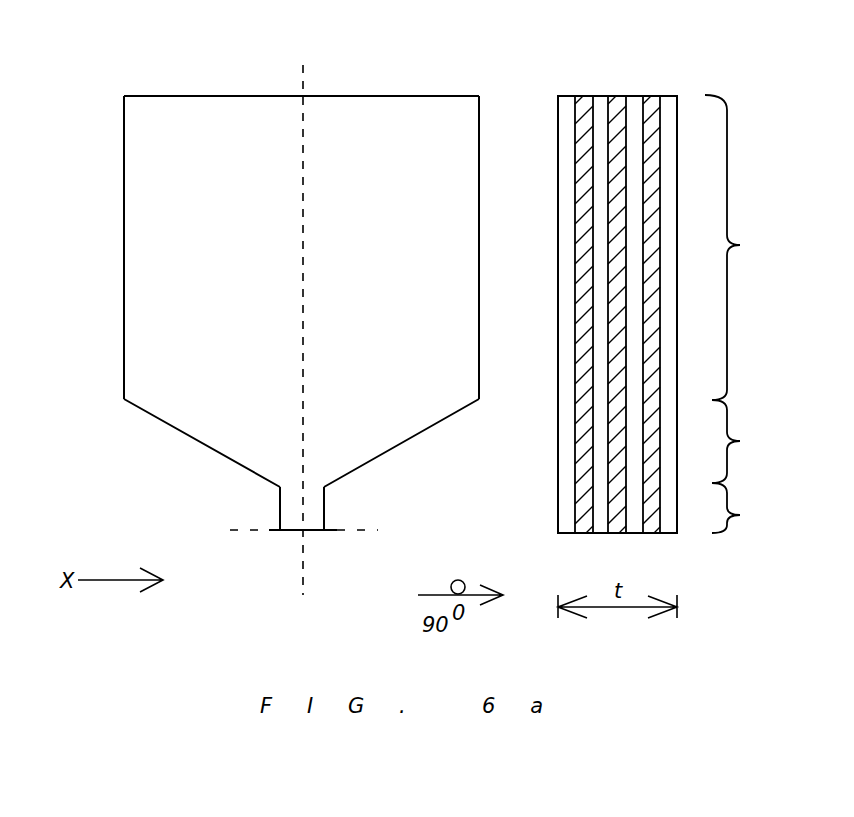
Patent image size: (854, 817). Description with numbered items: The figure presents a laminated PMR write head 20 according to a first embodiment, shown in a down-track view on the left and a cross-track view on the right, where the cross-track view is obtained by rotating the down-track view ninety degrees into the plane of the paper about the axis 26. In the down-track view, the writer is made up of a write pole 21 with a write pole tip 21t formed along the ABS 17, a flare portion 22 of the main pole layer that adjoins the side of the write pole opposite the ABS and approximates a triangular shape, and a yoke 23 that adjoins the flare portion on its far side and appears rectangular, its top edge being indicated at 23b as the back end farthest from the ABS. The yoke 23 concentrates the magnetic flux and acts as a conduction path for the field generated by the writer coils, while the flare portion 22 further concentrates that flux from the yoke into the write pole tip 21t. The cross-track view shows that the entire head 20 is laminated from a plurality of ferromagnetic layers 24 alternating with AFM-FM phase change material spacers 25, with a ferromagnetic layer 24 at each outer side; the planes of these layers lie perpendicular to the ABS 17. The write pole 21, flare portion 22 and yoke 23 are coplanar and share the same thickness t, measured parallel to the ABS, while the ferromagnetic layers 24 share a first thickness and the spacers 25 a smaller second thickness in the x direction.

The PMR write head 20 is at (104, 84).
The yoke 23 is at (140, 252).
The top edge of body portion 23b is at (403, 95).
The flare portion 22 is at (207, 422).
The write pole 21 is at (738, 508).
The write pole tip 21t is at (318, 533).
The ABS 17 is at (308, 530).
The axis 26 is at (304, 325).
The ferromagnetic layers 24 is at (637, 155).
The AFM-FM phase change material spacers 25 is at (579, 100).